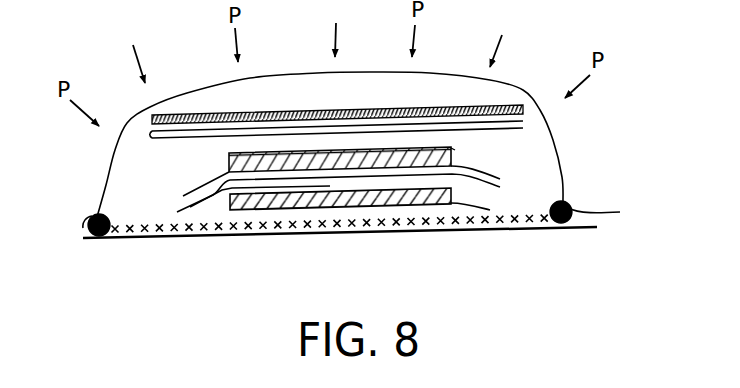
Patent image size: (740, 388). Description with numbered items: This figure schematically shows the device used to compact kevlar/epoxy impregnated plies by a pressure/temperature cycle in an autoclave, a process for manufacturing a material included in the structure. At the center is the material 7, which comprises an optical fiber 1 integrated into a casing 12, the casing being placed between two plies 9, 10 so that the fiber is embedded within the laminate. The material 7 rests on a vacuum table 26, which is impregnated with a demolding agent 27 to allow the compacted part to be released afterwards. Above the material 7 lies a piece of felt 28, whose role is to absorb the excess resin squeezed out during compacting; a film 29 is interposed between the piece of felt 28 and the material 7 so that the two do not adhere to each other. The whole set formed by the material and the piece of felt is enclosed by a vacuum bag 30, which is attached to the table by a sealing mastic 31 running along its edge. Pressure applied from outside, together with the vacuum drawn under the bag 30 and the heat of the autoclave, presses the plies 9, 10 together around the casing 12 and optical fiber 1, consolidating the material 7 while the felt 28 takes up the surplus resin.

The optical fiber 1 is at (504, 185).
The material 7 is at (452, 149).
The ply 9 is at (228, 160).
The ply 10 is at (228, 196).
The casing 12 is at (197, 191).
The vacuum table 26 is at (100, 245).
The demolding agent 27 is at (453, 231).
The piece of felt 28 is at (152, 121).
The film 29 is at (523, 124).
The vacuum bag 30 is at (518, 80).
The sealing mastic 31 is at (562, 227).